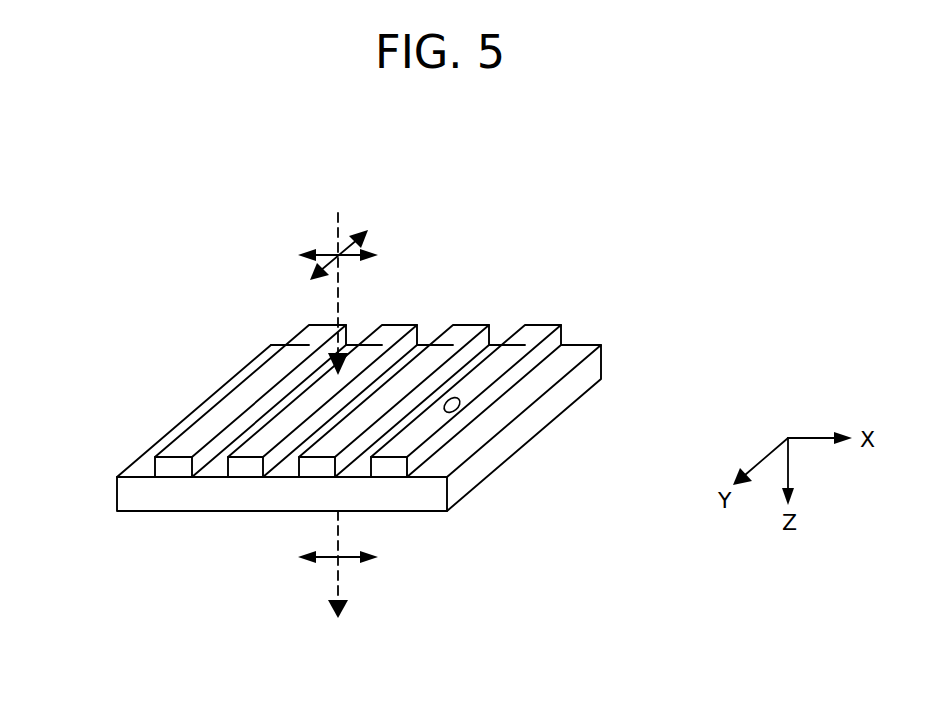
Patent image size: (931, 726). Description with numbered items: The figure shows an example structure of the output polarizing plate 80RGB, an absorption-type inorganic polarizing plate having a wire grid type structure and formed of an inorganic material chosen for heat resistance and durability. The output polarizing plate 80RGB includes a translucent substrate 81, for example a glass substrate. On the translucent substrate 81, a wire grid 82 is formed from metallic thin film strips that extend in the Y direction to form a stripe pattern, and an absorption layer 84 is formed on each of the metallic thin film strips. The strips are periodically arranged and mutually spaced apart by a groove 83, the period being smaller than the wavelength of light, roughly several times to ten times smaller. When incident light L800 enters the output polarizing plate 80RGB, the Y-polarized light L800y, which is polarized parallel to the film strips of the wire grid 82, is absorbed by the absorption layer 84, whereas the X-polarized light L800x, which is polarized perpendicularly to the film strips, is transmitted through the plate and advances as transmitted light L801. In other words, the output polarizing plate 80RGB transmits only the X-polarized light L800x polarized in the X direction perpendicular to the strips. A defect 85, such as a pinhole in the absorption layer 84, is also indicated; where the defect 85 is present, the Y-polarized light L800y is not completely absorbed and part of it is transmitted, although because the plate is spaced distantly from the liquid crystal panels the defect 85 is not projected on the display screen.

The output polarizing plate 80RGB is at (600, 318).
The translucent substrate 81 is at (520, 430).
The wire grid 82 is at (167, 473).
The groove 83 is at (212, 472).
The absorption layer 84 is at (153, 463).
The defect 85 is at (456, 411).
The incident light L800 is at (335, 230).
The X-polarized light L800x is at (377, 253).
The Y-polarized light L800y is at (310, 278).
The transmitted light L801 is at (345, 615).